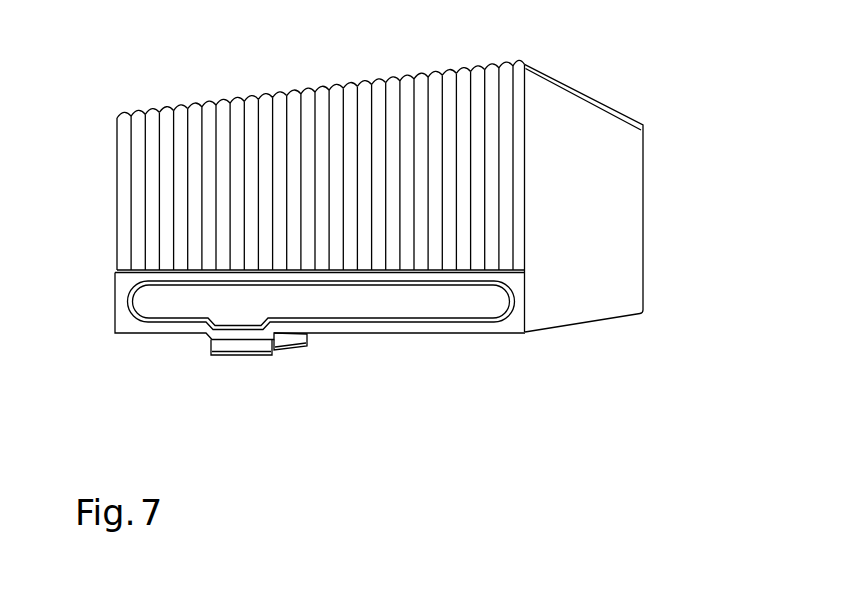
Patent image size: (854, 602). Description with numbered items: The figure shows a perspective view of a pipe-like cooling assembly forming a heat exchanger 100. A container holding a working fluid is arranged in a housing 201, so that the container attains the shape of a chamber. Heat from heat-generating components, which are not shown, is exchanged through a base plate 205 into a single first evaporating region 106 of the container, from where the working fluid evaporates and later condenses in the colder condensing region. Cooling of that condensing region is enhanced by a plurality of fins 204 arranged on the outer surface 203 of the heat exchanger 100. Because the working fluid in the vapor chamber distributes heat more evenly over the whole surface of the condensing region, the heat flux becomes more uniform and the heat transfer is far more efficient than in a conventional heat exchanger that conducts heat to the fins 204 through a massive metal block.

The heat exchanger 100 is at (337, 211).
The housing 201 is at (557, 280).
The fins 204 is at (373, 115).
The outer surface 203 is at (202, 268).
The first evaporating region 106 is at (202, 307).
The base plate 205 is at (281, 339).